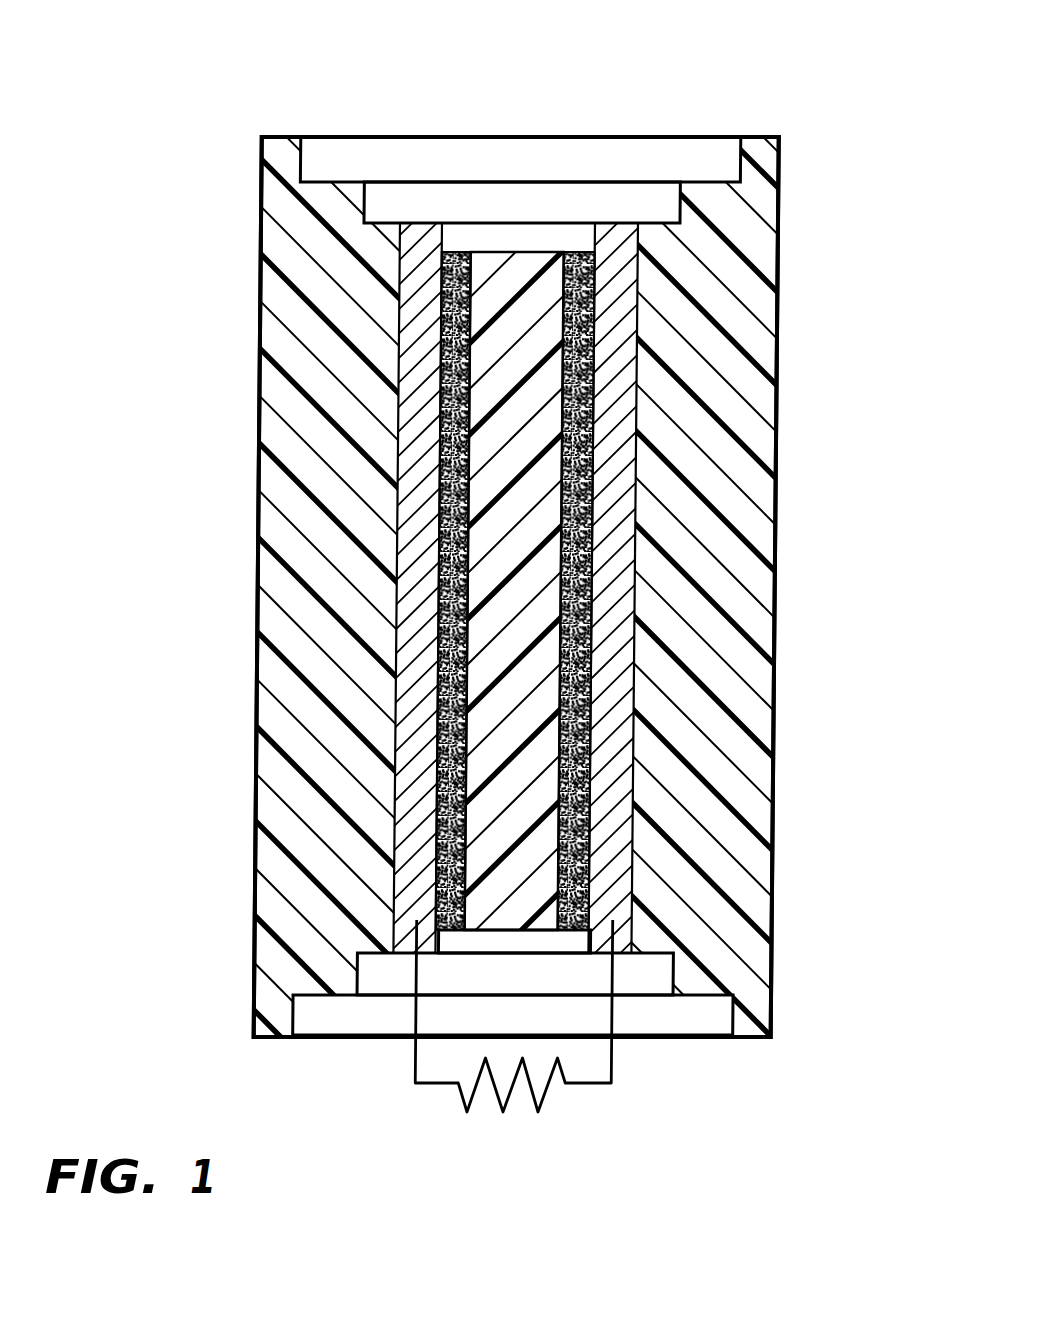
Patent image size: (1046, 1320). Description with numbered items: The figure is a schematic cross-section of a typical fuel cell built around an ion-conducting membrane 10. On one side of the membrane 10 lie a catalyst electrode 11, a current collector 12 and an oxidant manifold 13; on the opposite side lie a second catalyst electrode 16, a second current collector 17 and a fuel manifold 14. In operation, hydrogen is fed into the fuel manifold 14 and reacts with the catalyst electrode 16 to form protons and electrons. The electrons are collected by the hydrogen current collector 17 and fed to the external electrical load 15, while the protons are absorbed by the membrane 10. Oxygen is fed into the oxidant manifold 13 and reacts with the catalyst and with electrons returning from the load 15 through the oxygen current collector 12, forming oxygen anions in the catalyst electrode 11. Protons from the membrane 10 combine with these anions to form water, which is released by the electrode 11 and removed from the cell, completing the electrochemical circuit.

The ion-conducting membrane 10 is at (516, 272).
The catalyst electrode 11 is at (580, 250).
The current collector 12 is at (628, 232).
The oxidant manifold 13 is at (748, 570).
The fuel manifold 14 is at (288, 578).
The external electrical load 15 is at (557, 1090).
The second catalyst electrode 16 is at (460, 253).
The second current collector 17 is at (427, 257).